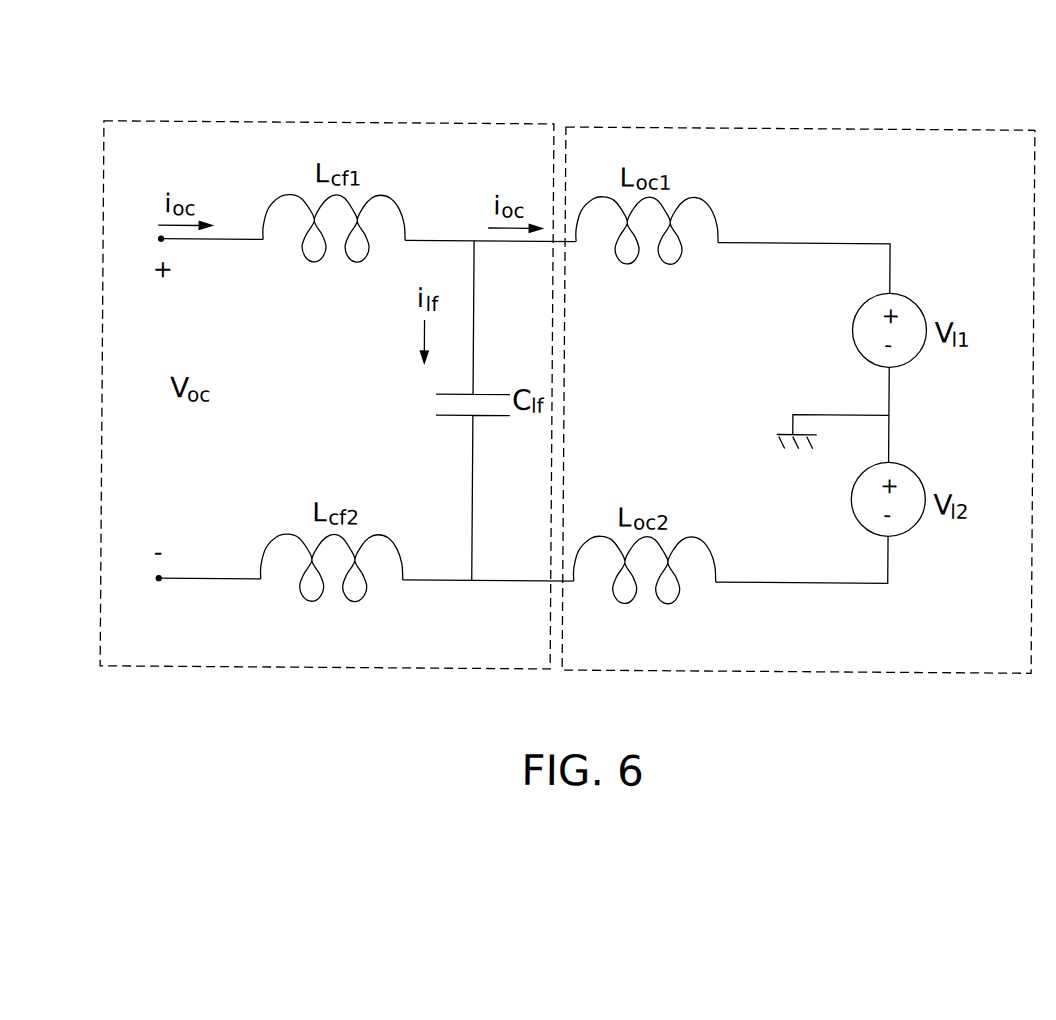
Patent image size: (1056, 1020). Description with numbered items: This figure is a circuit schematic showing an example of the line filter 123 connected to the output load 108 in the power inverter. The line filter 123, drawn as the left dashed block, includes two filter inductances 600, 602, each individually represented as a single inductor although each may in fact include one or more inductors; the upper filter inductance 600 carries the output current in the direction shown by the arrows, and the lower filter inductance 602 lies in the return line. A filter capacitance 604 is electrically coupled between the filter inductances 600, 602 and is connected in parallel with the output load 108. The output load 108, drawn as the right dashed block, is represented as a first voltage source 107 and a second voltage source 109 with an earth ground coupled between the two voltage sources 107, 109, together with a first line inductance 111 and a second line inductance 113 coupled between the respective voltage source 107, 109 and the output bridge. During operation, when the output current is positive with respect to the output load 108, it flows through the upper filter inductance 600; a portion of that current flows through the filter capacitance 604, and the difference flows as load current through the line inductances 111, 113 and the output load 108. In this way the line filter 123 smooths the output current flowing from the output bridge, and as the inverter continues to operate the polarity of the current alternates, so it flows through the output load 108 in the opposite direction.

The line filter 123 is at (441, 124).
The output load 108 is at (964, 127).
The first line inductance 111 is at (720, 211).
The second line inductance 113 is at (693, 586).
The first voltage source 107 is at (907, 293).
The second voltage source 109 is at (907, 463).
The filter inductance 600 is at (315, 284).
The filter inductance 602 is at (290, 532).
The filter capacitance 604 is at (458, 423).